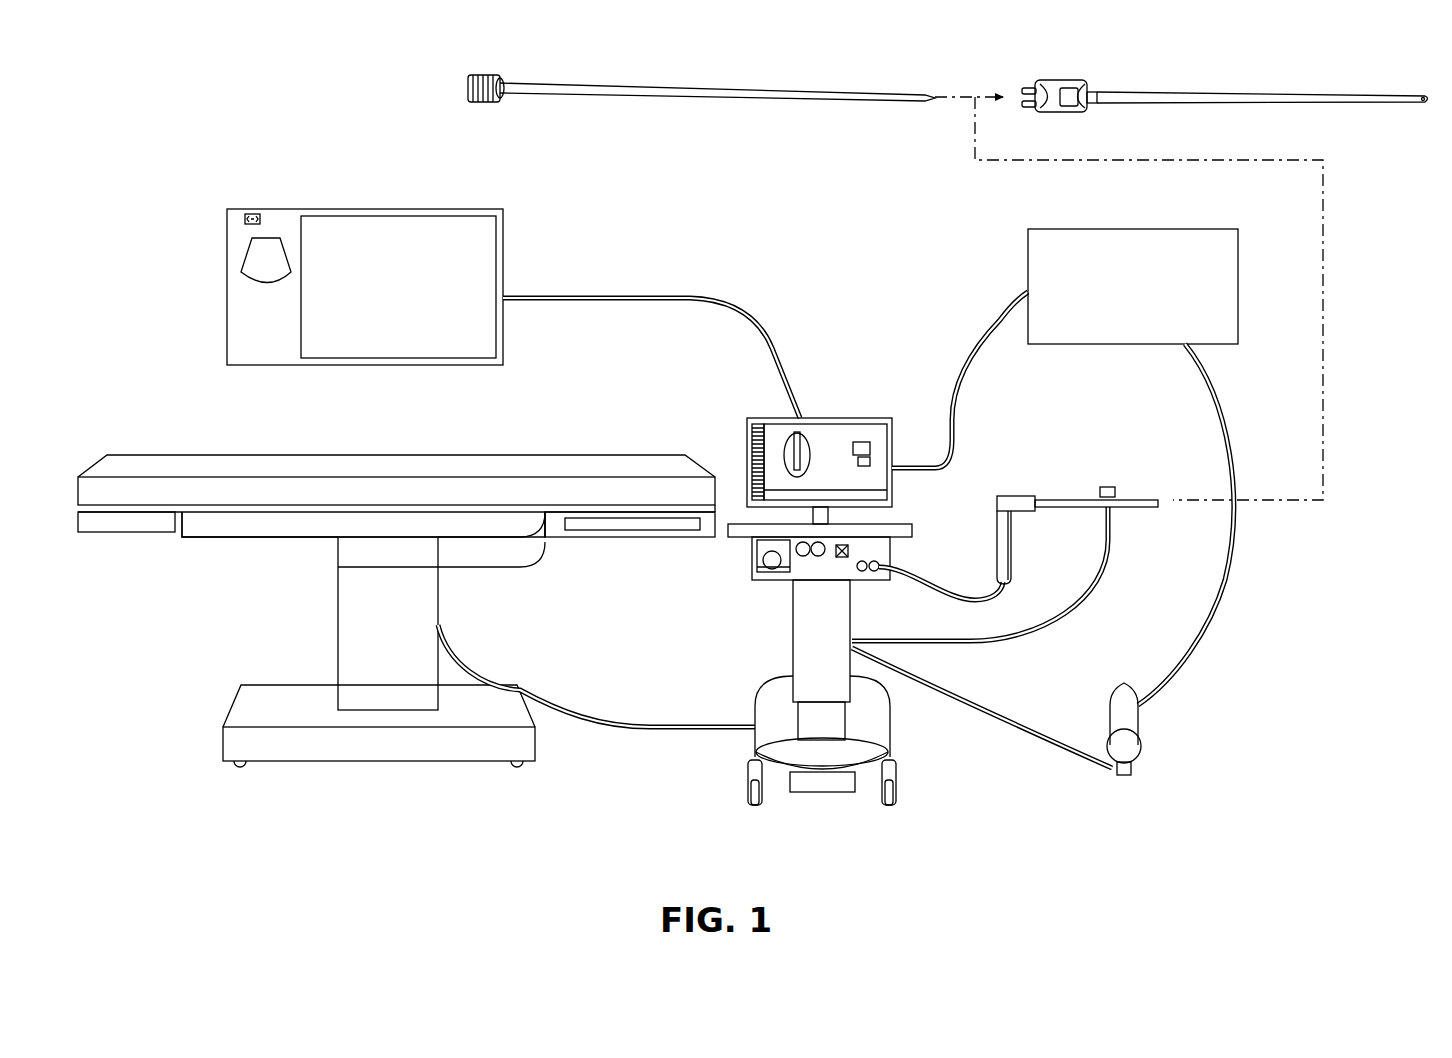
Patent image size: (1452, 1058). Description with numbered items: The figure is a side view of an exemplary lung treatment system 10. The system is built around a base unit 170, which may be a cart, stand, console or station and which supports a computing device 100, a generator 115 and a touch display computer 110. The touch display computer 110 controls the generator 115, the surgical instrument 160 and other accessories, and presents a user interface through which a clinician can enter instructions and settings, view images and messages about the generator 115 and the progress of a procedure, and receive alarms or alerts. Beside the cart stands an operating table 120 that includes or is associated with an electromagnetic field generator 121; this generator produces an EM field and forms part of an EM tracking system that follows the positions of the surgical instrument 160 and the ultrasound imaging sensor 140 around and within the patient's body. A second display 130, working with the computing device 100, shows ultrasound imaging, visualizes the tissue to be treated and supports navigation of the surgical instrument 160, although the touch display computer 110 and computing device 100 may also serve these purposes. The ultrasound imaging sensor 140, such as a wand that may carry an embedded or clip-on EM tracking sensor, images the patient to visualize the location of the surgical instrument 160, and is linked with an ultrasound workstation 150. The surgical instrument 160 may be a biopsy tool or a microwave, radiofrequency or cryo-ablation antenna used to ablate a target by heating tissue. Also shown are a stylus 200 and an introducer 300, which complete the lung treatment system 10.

The lung treatment system 10 is at (332, 180).
The computing device 100 is at (793, 613).
The touch display computer 110 is at (836, 408).
The generator 115 is at (733, 558).
The operating table 120 is at (147, 464).
The electromagnetic field generator 121 is at (318, 512).
The second display 130 is at (503, 251).
The ultrasound imaging sensor 140 is at (1124, 684).
The ultrasound workstation 150 is at (1133, 467).
The surgical instrument 160 is at (1014, 496).
The base unit 170 is at (728, 782).
The stylus 200 is at (754, 80).
The introducer 300 is at (1196, 80).